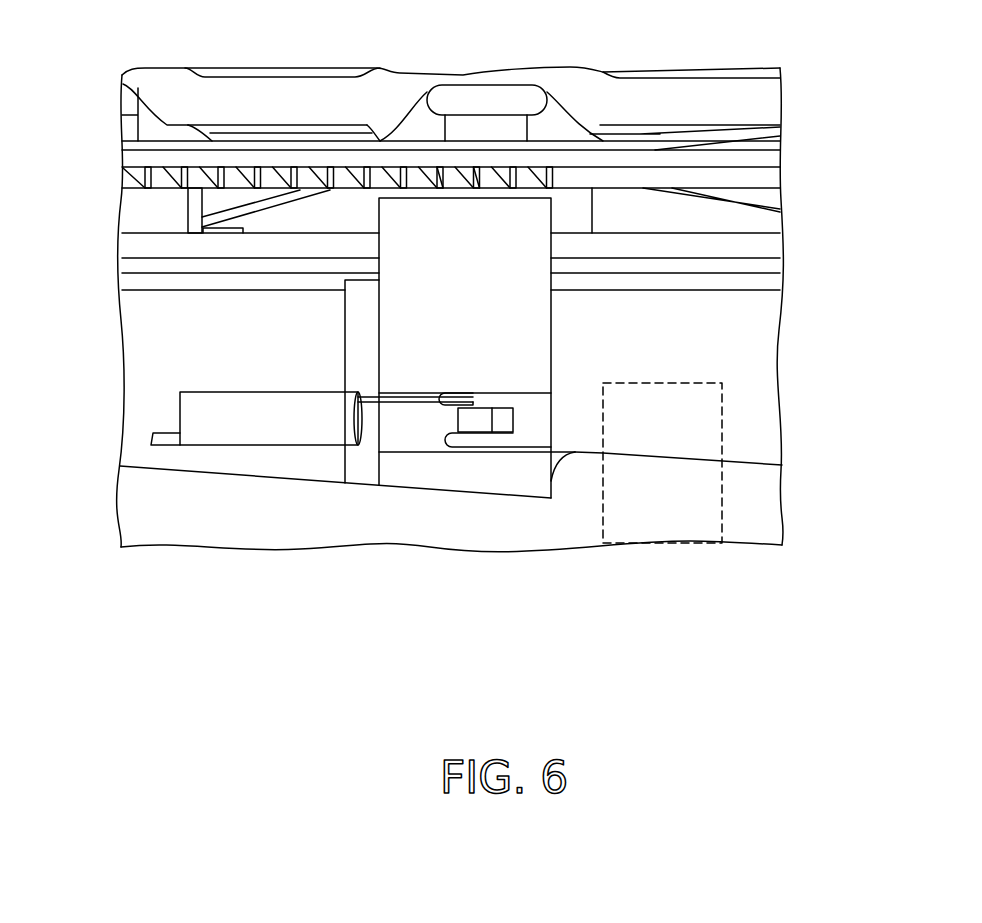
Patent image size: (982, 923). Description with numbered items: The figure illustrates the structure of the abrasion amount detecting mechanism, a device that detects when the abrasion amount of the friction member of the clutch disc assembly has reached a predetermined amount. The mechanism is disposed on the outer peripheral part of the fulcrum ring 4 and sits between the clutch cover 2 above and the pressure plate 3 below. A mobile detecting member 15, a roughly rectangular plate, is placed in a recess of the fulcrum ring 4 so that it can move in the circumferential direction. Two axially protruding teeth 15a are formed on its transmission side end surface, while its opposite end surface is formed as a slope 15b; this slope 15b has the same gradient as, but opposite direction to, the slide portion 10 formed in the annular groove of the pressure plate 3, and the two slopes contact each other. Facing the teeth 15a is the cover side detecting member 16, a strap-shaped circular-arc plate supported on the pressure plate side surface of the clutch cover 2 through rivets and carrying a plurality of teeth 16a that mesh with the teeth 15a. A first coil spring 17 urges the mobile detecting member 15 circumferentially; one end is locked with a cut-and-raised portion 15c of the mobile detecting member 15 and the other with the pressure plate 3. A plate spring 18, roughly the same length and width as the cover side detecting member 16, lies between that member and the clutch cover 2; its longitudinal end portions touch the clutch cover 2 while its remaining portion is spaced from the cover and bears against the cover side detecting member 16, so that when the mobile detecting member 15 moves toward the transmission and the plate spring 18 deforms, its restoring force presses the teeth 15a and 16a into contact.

The clutch cover 2 is at (765, 99).
The pressure plate 3 is at (765, 507).
The fulcrum ring 4 is at (757, 330).
The slide portion 10 is at (740, 452).
The mobile detecting member 15 is at (450, 314).
The teeth 15a is at (480, 193).
The slope 15b is at (425, 490).
The cut-and-raised portion 15c is at (503, 422).
The cover side detecting member 16 is at (444, 194).
The teeth 16a is at (210, 176).
The first coil spring 17 is at (227, 418).
The plate spring 18 is at (679, 148).